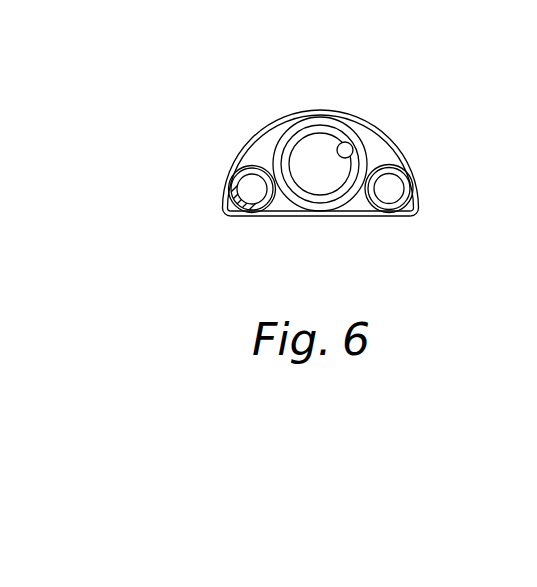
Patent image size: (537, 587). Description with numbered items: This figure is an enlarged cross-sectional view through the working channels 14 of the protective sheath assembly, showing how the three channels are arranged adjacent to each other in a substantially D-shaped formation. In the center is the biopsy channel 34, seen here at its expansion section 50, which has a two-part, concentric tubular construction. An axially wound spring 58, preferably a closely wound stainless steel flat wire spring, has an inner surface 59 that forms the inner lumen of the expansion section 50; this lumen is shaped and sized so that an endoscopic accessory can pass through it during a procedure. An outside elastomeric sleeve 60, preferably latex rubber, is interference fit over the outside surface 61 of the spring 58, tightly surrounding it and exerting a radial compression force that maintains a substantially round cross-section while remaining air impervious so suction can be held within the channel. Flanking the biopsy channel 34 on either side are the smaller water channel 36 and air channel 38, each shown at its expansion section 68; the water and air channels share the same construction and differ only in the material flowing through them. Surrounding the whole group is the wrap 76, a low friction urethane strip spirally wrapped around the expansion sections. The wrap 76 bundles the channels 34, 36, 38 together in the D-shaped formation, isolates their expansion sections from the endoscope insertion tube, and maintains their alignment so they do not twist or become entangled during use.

The working channels 14 is at (402, 151).
The biopsy channel 34 is at (375, 155).
The water channel 36 is at (248, 182).
The air channel 38 is at (400, 183).
The expansion section 50 is at (248, 138).
The axially wound spring 58 is at (337, 142).
The inner surface 59 is at (352, 142).
The elastomeric sleeve 60 is at (300, 128).
The outside surface 61 is at (285, 147).
The expansion section 68 is at (233, 196).
The wrap 76 is at (323, 217).